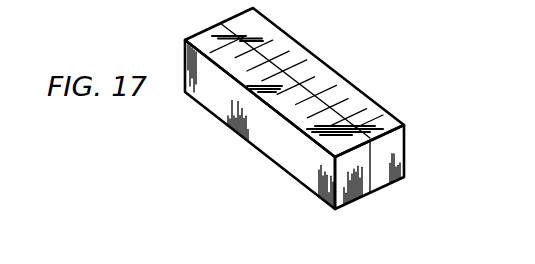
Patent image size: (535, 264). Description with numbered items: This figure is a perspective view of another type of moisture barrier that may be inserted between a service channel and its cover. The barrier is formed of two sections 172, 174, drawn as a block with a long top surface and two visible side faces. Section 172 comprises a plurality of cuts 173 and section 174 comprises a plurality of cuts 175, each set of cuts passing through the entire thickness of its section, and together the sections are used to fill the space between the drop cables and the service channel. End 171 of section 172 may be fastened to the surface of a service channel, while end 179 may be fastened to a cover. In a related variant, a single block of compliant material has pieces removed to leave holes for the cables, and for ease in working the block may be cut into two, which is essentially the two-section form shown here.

The end 171 is at (396, 115).
The section 172 is at (396, 152).
The cuts 173 is at (307, 77).
The section 174 is at (350, 197).
The cuts 175 is at (247, 88).
The end 179 is at (293, 160).